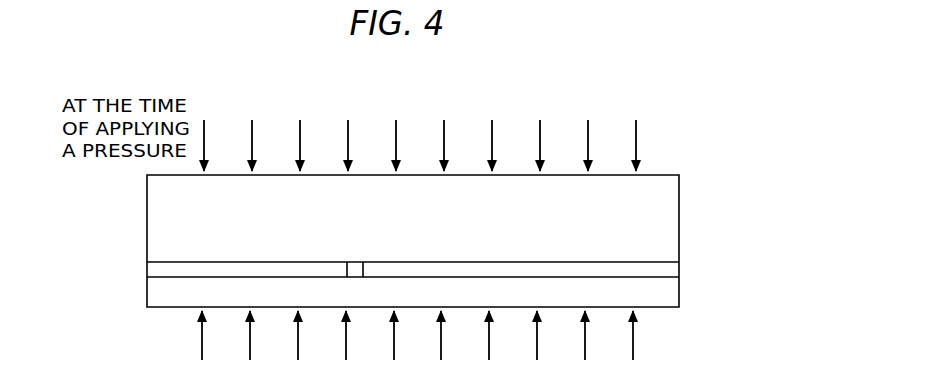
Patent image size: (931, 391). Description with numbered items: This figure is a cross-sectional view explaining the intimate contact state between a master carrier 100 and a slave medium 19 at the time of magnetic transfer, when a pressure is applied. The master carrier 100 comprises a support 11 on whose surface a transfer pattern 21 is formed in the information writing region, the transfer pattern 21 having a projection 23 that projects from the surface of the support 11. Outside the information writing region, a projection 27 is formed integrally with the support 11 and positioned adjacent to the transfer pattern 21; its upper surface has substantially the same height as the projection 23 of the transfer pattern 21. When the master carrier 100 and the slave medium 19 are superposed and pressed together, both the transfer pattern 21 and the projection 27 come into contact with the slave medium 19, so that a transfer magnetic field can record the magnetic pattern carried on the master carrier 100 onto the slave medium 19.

The slave medium 19 is at (141, 222).
The transfer pattern 21 is at (666, 259).
The projection of the transfer pattern 23 is at (673, 270).
The projection 27 is at (147, 271).
The support 11 is at (673, 297).
The master carrier 100 is at (398, 261).